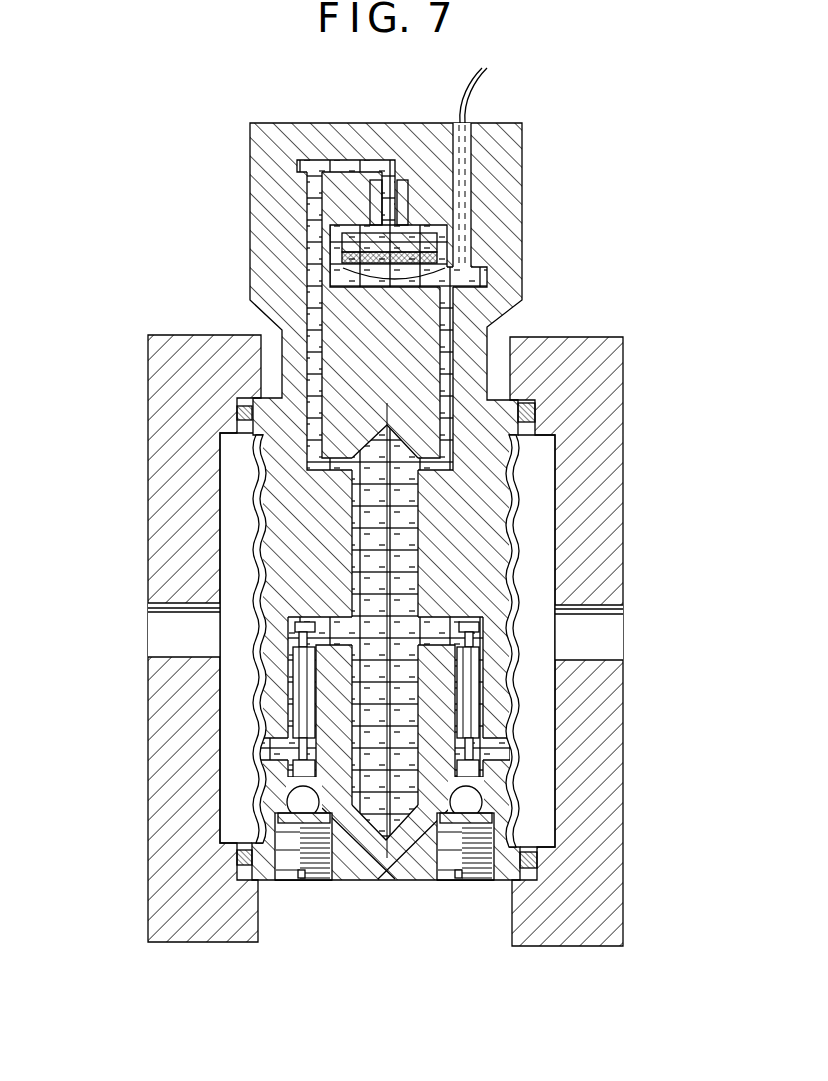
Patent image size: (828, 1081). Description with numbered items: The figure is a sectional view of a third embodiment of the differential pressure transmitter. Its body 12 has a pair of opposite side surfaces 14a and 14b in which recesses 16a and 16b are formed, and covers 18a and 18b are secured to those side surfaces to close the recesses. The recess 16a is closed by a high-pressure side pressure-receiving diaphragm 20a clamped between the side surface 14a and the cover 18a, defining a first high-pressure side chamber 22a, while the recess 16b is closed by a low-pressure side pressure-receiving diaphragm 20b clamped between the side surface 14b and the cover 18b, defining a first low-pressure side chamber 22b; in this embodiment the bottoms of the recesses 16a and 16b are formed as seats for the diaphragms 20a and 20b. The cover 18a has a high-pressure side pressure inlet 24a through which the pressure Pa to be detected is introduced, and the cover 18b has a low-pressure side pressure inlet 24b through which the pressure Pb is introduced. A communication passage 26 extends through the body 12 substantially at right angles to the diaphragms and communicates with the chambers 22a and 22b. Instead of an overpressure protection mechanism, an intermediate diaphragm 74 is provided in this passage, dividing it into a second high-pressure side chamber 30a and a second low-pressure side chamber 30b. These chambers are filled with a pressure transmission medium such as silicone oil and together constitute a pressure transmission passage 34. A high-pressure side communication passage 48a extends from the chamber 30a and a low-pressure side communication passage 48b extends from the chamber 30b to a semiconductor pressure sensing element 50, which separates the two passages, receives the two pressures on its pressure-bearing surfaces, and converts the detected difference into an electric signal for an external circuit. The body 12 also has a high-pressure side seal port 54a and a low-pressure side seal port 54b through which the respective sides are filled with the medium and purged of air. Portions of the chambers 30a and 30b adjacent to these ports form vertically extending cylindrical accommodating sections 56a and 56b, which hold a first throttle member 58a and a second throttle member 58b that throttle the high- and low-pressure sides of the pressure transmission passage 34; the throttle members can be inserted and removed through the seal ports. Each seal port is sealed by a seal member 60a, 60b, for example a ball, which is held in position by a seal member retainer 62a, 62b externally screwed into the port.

The body 12 is at (523, 196).
The side surface 14a is at (250, 425).
The side surface 14b is at (536, 402).
The recess 16a is at (256, 460).
The recess 16b is at (516, 472).
The cover 18a is at (155, 556).
The cover 18b is at (607, 511).
The high-pressure side pressure-receiving diaphragm 20a is at (262, 747).
The low-pressure side pressure-receiving diaphragm 20b is at (520, 745).
The first high-pressure side chamber 22a is at (255, 528).
The first low-pressure side chamber 22b is at (517, 790).
The high-pressure side pressure inlet 24a is at (172, 648).
The low-pressure side pressure inlet 24b is at (605, 652).
The communication passage 26 is at (407, 550).
The second high-pressure side chamber 30a is at (406, 507).
The second low-pressure side chamber 30b is at (366, 510).
The pressure transmission passage 34 is at (322, 583).
The high-pressure side communication passage 48a is at (312, 263).
The low-pressure side communication passage 48b is at (449, 312).
The semiconductor pressure sensing element 50 is at (416, 236).
The high-pressure side seal port 54a is at (338, 845).
The low-pressure side seal port 54b is at (440, 845).
The accommodating section 56a is at (288, 638).
The accommodating section 56b is at (480, 640).
The first throttle member 58a is at (300, 704).
The second throttle member 58b is at (472, 695).
The seal member 60a is at (298, 801).
The seal member 60b is at (470, 800).
The seal member retainer 62a is at (286, 876).
The seal member retainer 62b is at (455, 876).
The intermediate diaphragm 74 is at (389, 843).
The pressure Pa is at (128, 630).
The pressure Pb is at (645, 630).